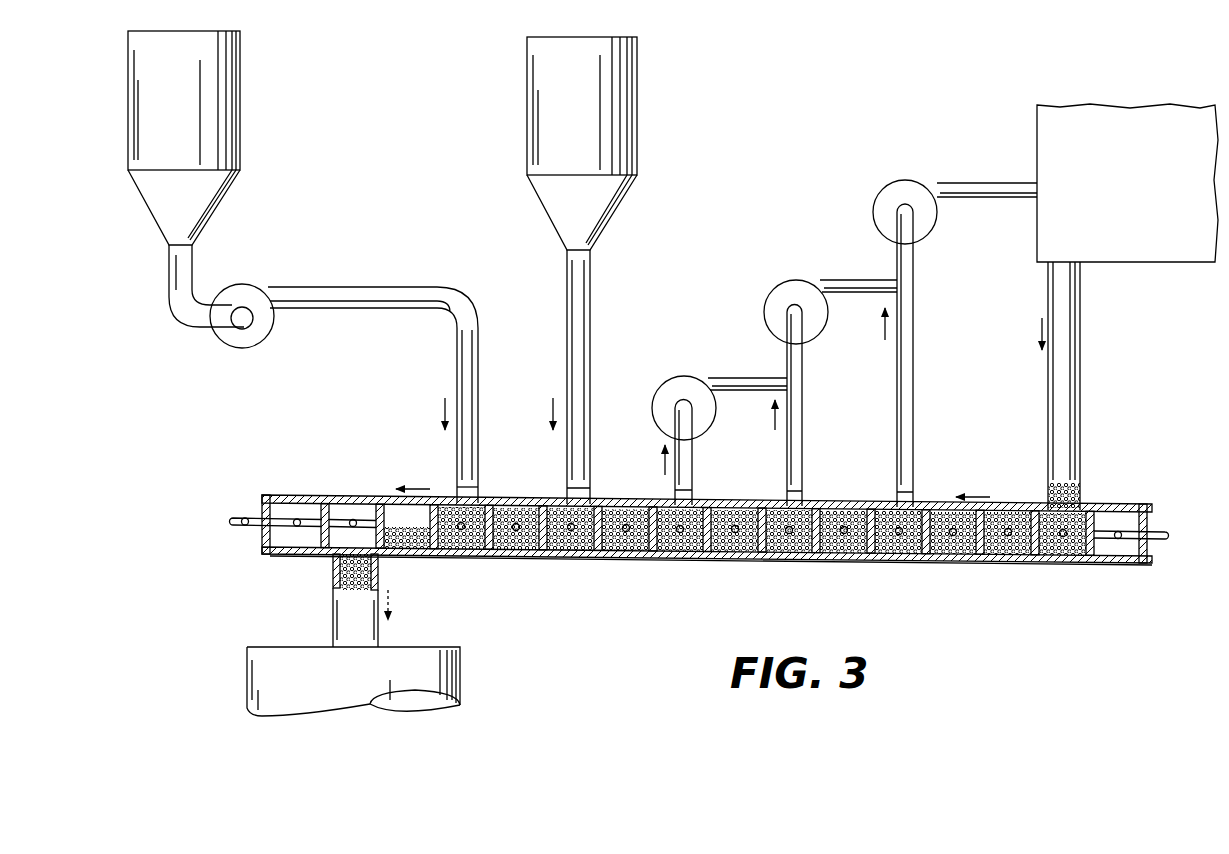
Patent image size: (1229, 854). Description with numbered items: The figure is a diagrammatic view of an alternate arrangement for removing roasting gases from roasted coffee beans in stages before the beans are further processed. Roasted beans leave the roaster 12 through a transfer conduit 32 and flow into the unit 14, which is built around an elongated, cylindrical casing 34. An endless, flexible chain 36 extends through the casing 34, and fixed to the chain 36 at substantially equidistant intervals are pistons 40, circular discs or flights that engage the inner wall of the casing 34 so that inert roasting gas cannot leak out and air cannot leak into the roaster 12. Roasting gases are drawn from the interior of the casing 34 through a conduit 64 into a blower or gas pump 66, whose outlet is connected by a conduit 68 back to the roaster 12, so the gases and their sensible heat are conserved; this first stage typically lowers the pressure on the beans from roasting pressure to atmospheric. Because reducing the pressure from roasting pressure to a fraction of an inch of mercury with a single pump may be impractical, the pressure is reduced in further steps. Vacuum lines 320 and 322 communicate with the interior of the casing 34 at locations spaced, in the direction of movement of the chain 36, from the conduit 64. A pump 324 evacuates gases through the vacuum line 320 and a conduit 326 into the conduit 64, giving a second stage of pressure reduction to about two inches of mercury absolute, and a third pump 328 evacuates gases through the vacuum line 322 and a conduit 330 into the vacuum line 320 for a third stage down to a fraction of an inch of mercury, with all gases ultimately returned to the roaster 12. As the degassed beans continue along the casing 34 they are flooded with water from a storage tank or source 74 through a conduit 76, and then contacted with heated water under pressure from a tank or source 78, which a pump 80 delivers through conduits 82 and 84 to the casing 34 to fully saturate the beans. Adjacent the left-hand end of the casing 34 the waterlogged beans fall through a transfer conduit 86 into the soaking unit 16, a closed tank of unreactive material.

The roaster 12 is at (1104, 161).
The unit 14 is at (930, 568).
The soaking unit 16 is at (462, 648).
The transfer conduit 32 is at (1082, 318).
The casing 34 is at (783, 562).
The endless chain 36 is at (233, 515).
The pistons 40 is at (322, 505).
The conduit 64 is at (913, 328).
The blower or gas pump 66 is at (880, 192).
The conduit 68 is at (1005, 183).
The storage tank or source 74 is at (527, 86).
The conduit 76 is at (565, 272).
The tank or source 78 is at (242, 66).
The pump 80 is at (268, 334).
The conduit 82 is at (169, 272).
The conduit 84 is at (375, 285).
The transfer conduit 86 is at (333, 606).
The vacuum line 320 is at (804, 444).
The vacuum line 322 is at (692, 468).
The pump 324 is at (764, 300).
The conduit 326 is at (857, 278).
The third pump 328 is at (660, 388).
The conduit 330 is at (752, 378).